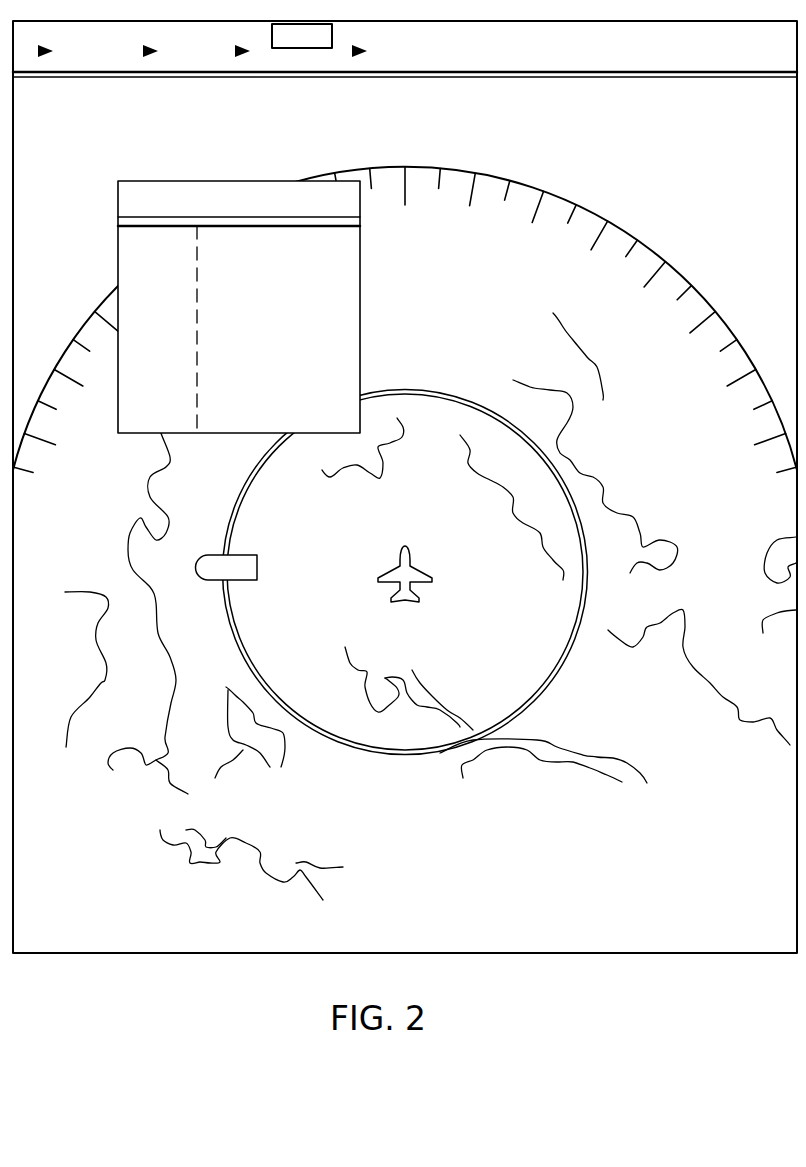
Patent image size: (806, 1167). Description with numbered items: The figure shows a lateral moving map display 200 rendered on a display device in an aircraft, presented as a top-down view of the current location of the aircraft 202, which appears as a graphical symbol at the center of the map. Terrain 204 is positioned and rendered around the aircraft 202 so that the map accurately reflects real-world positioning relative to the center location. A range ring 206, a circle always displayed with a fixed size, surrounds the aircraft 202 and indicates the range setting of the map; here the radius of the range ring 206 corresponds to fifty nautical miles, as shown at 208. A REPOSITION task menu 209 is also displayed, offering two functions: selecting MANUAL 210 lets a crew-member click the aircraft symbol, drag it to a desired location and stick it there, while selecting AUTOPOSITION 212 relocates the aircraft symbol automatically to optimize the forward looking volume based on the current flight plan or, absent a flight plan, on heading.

The lateral moving map display 200 is at (663, 327).
The aircraft 202 is at (413, 556).
The terrain 204 is at (206, 847).
The range ring 206 is at (563, 668).
The range distance indication 208 is at (258, 570).
The REPOSITION task menu 209 is at (239, 282).
The MANUAL selection 210 is at (184, 267).
The AUTOPOSITION selection 212 is at (232, 312).